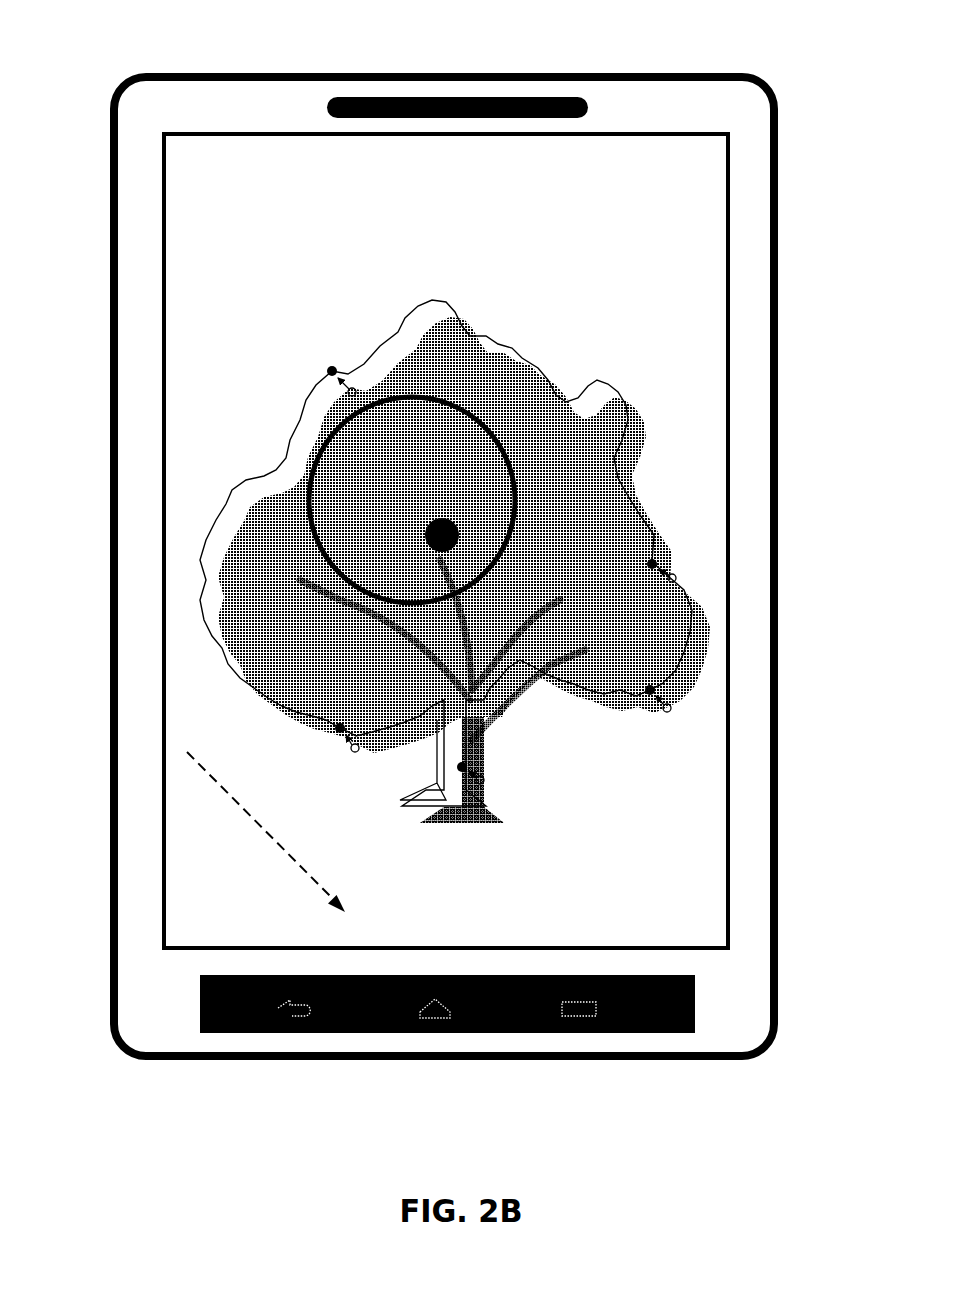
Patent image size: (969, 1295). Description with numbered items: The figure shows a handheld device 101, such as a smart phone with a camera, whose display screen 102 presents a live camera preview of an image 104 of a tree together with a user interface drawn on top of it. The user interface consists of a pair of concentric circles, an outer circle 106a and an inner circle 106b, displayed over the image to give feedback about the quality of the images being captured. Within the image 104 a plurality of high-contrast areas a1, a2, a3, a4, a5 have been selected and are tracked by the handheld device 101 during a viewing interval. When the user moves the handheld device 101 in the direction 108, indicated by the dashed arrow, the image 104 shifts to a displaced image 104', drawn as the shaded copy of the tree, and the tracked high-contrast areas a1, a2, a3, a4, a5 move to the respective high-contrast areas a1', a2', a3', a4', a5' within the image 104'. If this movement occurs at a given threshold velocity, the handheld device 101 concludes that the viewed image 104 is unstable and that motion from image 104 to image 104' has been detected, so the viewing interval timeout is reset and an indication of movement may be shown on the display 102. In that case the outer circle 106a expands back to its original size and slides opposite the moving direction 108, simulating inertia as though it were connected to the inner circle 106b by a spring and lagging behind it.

The handheld device 101 is at (778, 137).
The display screen 102 is at (628, 132).
The image 104 is at (446, 553).
The shifted image 104' is at (464, 536).
The outer circle 106a is at (310, 470).
The inner circle 106b is at (440, 530).
The direction of movement 108 is at (207, 772).
The high-contrast area a1 is at (693, 584).
The moved high-contrast area a1' is at (681, 555).
The high-contrast area a2 is at (324, 393).
The moved high-contrast area a2' is at (308, 363).
The high-contrast area a3 is at (691, 713).
The moved high-contrast area a3' is at (682, 690).
The high-contrast area a4 is at (501, 790).
The moved high-contrast area a4' is at (490, 770).
The high-contrast area a5 is at (381, 753).
The moved high-contrast area a5' is at (370, 730).